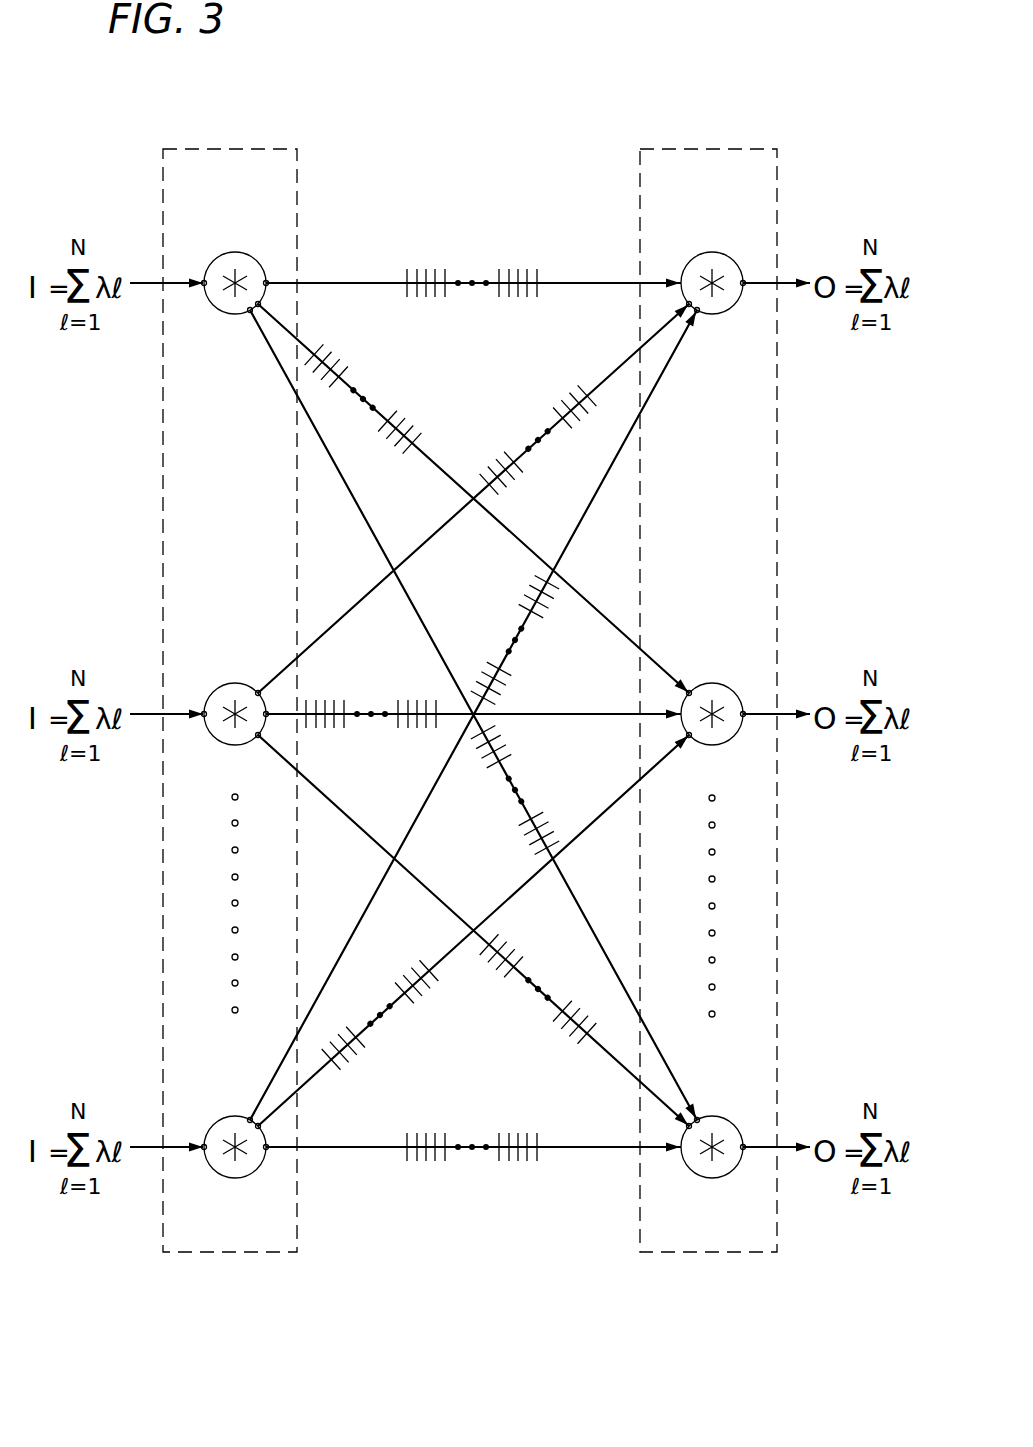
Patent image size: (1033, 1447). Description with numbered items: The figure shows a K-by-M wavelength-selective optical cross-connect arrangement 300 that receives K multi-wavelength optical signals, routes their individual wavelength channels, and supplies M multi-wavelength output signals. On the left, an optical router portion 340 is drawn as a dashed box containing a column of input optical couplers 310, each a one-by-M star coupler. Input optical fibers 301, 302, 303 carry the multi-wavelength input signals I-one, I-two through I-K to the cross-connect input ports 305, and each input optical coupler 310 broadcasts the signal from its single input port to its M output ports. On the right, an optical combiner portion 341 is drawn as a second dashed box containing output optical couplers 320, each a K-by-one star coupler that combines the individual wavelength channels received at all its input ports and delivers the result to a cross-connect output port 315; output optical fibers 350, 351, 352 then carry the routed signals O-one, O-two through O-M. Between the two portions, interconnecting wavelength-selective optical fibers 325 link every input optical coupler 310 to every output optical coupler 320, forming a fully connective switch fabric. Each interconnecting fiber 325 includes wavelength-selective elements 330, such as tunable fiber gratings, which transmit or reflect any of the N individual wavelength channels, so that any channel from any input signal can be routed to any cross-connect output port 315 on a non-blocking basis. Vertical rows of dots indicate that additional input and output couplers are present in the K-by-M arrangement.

The optical cross-connect arrangement 300 is at (197, 77).
The input optical fiber 301 is at (150, 280).
The input optical fiber 302 is at (150, 711).
The input optical fiber 303 is at (138, 1144).
The cross-connect input port 305 is at (203, 280).
The input optical coupler 310 is at (212, 302).
The cross-connect output port 315 is at (746, 280).
The output optical coupler 320 is at (714, 253).
The interconnecting wavelength-selective optical fiber 325 is at (268, 280).
The wavelength-selective element 330 is at (451, 742).
The optical router portion 340 is at (273, 148).
The optical combiner portion 341 is at (746, 148).
The output optical fiber 350 is at (786, 280).
The output optical fiber 351 is at (786, 711).
The output optical fiber 352 is at (786, 1144).